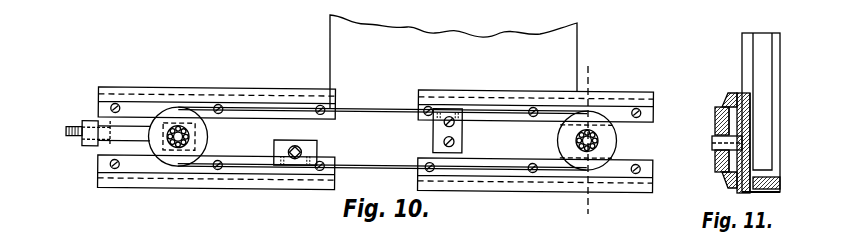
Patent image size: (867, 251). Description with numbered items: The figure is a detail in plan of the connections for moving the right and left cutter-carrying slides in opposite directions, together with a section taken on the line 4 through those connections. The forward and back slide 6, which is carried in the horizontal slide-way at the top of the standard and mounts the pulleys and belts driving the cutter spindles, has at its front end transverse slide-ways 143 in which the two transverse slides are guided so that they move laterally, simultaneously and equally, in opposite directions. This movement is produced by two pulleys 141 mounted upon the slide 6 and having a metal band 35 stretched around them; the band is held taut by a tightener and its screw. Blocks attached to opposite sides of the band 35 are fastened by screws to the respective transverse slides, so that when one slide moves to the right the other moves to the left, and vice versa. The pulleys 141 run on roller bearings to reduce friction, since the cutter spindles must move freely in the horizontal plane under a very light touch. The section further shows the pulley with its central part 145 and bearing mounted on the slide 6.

In FIG. 10, the section line 4 is at (587, 142).
In FIG. 10, the forward and back slide 6 is at (352, 60).
In FIG. 11, the forward and back slide 6 is at (742, 48).
In FIG. 10, the metal band 35 is at (368, 108).
In FIG. 11, the pulleys 141 is at (717, 117).
In FIG. 11, the transverse slide-ways 143 is at (717, 182).
In FIG. 11, the shaft 145 is at (713, 143).